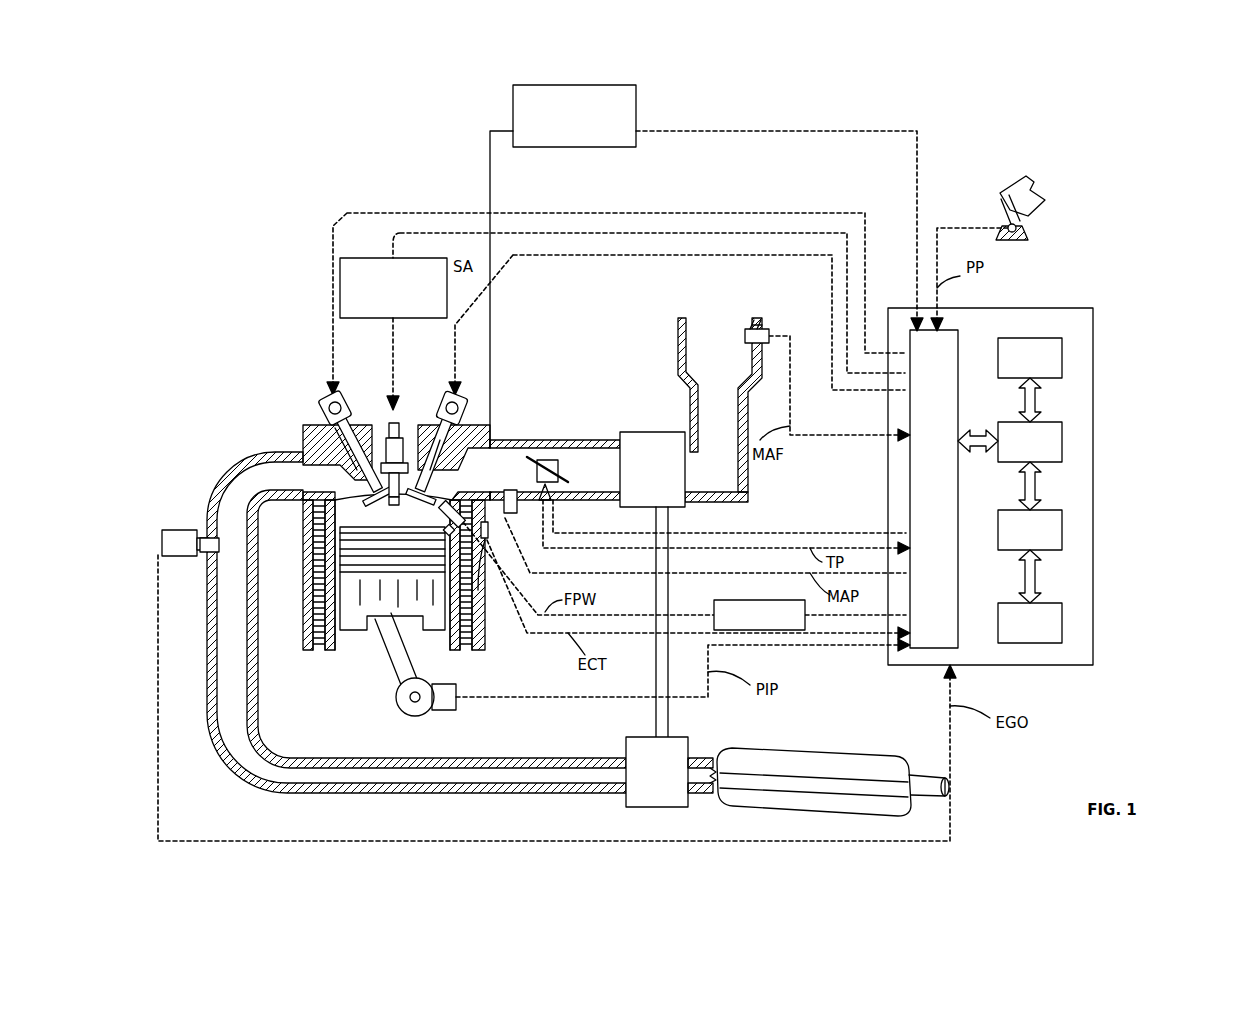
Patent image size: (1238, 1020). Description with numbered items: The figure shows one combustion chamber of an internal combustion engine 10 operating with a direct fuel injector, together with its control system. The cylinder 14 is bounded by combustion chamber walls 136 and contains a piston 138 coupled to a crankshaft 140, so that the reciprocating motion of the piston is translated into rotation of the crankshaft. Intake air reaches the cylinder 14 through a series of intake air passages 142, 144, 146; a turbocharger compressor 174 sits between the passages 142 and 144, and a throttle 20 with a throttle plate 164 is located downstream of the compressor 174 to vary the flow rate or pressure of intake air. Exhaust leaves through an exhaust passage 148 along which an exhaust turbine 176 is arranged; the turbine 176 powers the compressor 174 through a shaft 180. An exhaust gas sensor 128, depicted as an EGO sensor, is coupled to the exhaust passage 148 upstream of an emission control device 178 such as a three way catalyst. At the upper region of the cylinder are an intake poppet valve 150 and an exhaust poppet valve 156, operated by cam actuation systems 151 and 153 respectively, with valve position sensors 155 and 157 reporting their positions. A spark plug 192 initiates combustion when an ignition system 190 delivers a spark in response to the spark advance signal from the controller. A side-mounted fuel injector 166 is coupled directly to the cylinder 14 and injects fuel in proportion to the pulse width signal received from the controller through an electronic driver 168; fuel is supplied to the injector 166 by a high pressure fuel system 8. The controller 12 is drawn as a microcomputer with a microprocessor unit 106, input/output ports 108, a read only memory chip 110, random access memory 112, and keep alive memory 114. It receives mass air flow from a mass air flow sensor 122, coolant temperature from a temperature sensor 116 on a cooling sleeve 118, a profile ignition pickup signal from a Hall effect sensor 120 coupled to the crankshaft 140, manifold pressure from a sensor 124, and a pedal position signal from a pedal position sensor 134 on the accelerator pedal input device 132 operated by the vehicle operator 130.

The high pressure fuel system 8 is at (636, 98).
The internal combustion engine 10 is at (146, 156).
The controller 12 is at (1093, 308).
The cylinder 14 is at (325, 520).
The throttle 20 is at (545, 458).
The microprocessor unit 106 is at (1062, 440).
The input/output ports 108 is at (958, 338).
The read only memory chip 110 is at (1062, 356).
The random access memory 112 is at (1062, 535).
The keep alive memory 114 is at (1062, 625).
The temperature sensor 116 is at (485, 545).
The cooling sleeve 118 is at (478, 600).
The Hall effect sensor 120 is at (445, 712).
The mass air flow sensor 122 is at (763, 329).
The manifold pressure sensor 124 is at (511, 513).
The exhaust gas sensor 128 is at (162, 532).
The vehicle operator 130 is at (1045, 197).
The input device 132 is at (1002, 201).
The pedal position sensor 134 is at (1026, 228).
The combustion chamber walls 136 is at (335, 640).
The piston 138 is at (375, 605).
The crankshaft 140 is at (400, 712).
The intake air passage 142 is at (720, 405).
The intake air passage 144 is at (665, 480).
The intake air passage 146 is at (554, 470).
The exhaust passage 148 is at (413, 622).
The intake poppet valve 150 is at (407, 485).
The cam actuation system 151 is at (448, 392).
The cam actuation system 153 is at (337, 392).
The valve position sensor 155 is at (470, 415).
The exhaust poppet valve 156 is at (335, 452).
The valve position sensor 157 is at (323, 404).
The throttle plate 164 is at (527, 475).
The fuel injector 166 is at (475, 510).
The electronic driver 168 is at (714, 604).
The compressor 174 is at (642, 432).
The exhaust turbine 176 is at (626, 800).
The emission control device 178 is at (870, 750).
The shaft 180 is at (668, 722).
The ignition system 190 is at (355, 258).
The spark plug 192 is at (389, 445).